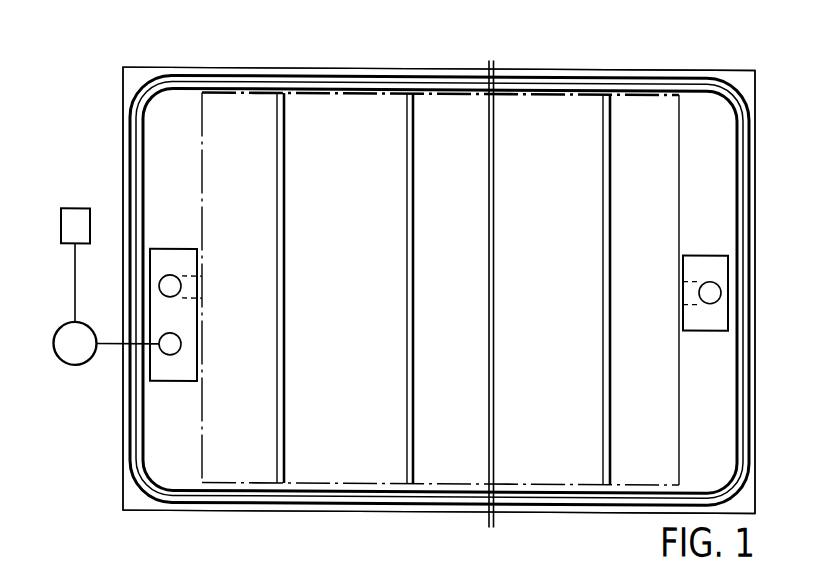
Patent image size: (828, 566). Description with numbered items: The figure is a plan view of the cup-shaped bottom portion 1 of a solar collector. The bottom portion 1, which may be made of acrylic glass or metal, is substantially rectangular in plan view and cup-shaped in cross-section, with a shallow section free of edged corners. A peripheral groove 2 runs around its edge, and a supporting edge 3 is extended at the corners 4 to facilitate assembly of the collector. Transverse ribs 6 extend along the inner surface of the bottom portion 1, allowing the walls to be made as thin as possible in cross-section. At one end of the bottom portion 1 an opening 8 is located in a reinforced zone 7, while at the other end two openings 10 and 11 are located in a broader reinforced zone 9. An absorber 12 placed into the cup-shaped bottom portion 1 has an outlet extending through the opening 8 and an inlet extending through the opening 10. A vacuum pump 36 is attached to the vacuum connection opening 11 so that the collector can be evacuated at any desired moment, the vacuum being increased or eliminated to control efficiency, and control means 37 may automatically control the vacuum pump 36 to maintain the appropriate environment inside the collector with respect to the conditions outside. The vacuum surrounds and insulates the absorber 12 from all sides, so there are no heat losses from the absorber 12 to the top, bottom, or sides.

The bottom portion 1 is at (563, 48).
The peripheral groove 2 is at (208, 80).
The supporting edge 3 is at (280, 73).
The corners 4 is at (140, 74).
The transverse ribs 6 is at (407, 287).
The reinforced zone 7 is at (703, 262).
The opening 8 is at (712, 290).
The broader reinforced zone 9 is at (172, 258).
The opening 10 is at (163, 286).
The opening 11 is at (168, 350).
The absorber 12 is at (368, 96).
The vacuum pump 36 is at (80, 366).
The control means 37 is at (83, 214).